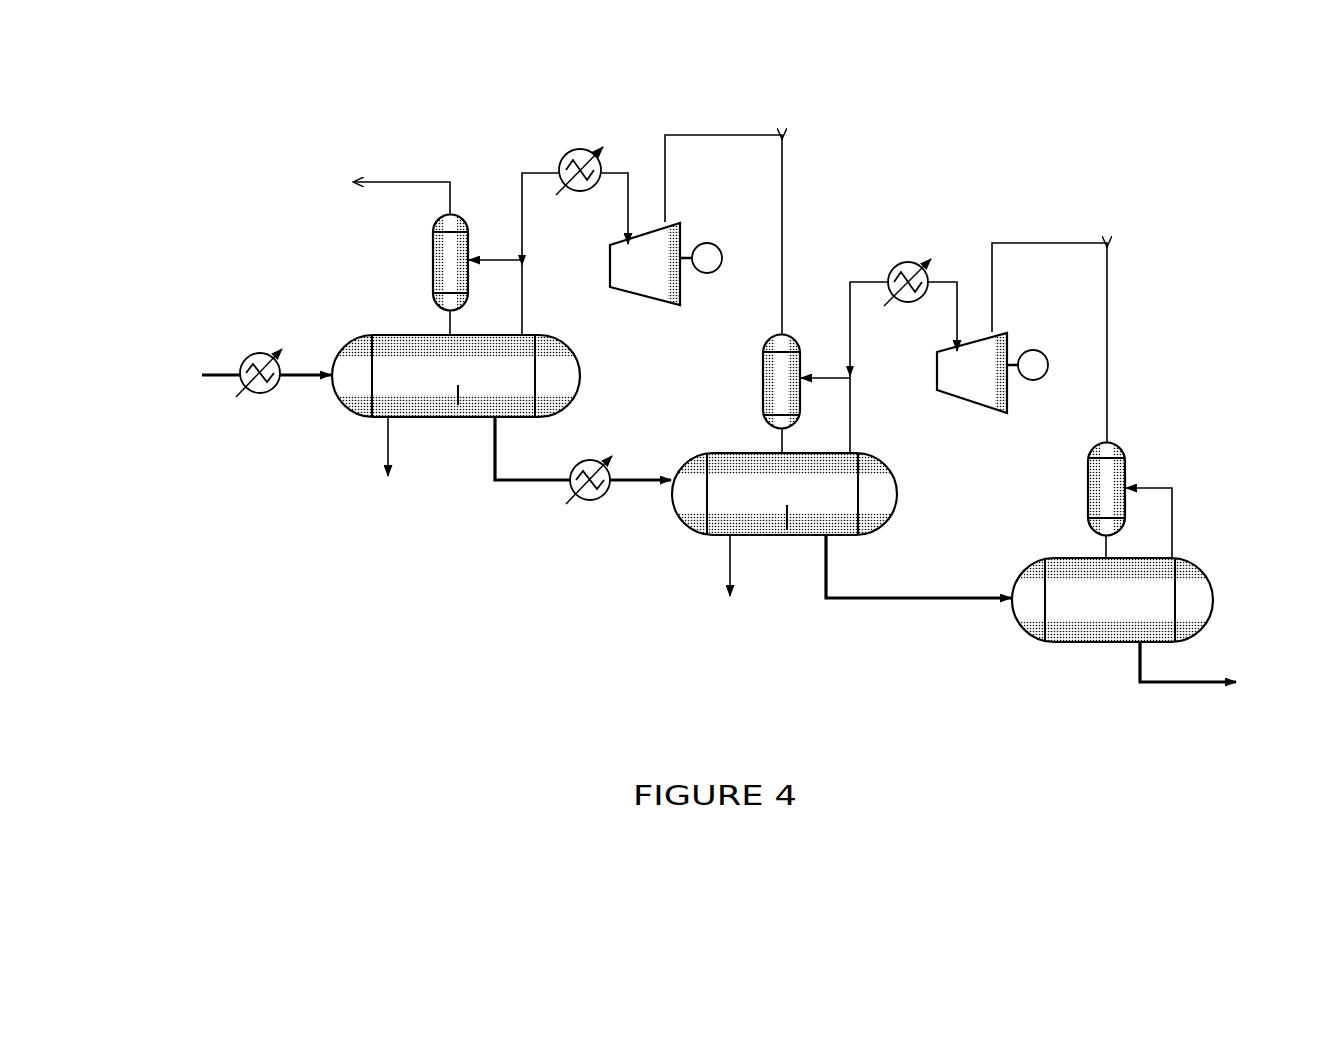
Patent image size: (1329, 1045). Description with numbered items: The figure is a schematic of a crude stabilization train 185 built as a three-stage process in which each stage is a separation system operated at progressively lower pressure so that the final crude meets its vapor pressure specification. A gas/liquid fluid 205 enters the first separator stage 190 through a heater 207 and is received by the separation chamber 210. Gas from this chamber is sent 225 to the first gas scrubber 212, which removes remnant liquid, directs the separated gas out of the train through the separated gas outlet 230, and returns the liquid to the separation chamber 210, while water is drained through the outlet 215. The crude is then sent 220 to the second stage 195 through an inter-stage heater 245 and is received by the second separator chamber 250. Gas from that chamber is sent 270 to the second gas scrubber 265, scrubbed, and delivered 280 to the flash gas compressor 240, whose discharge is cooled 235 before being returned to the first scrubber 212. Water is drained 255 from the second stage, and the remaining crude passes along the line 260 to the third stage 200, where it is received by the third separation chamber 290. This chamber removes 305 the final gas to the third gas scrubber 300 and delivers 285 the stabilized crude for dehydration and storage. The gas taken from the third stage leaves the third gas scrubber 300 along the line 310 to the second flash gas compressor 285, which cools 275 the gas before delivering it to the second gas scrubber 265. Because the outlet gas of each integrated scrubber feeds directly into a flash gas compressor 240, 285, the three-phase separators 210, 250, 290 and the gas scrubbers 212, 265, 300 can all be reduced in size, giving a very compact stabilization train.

The crude stabilization train 185 is at (1146, 125).
The first separator stage 190 is at (315, 537).
The second stage 195 is at (615, 634).
The third stage 200 is at (1015, 715).
The gas/liquid fluid 205 is at (235, 377).
The heater 207 is at (260, 385).
The separation chamber 210 is at (334, 410).
The first gas scrubber 212 is at (433, 259).
The water outlet 215 is at (398, 461).
The crude flow to second stage 220 is at (497, 486).
The gas flow to first gas scrubber 225 is at (502, 260).
The separated gas outlet 230 is at (367, 192).
The gas cooling 235 is at (580, 156).
The flash gas compressor 240 is at (650, 305).
The inter-stage heater 245 is at (593, 493).
The second separator chamber 250 is at (679, 522).
The water drain 255 is at (745, 581).
The second liquid stream 260 is at (859, 600).
The second gas scrubber 265 is at (763, 368).
The gas flow to second gas scrubber 270 is at (827, 376).
The gas cooling 275 is at (912, 267).
The scrubbed gas delivery 280 is at (784, 170).
The second flash gas compressor 285 is at (976, 411).
The third separation chamber 290 is at (1021, 637).
The third gas scrubber 300 is at (1088, 504).
The final gas removal 305 is at (1178, 492).
The third vapor line 310 is at (1108, 393).